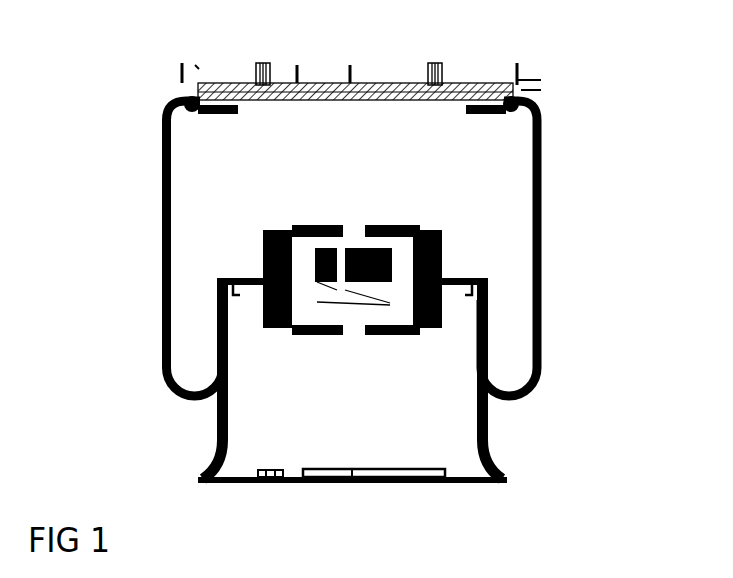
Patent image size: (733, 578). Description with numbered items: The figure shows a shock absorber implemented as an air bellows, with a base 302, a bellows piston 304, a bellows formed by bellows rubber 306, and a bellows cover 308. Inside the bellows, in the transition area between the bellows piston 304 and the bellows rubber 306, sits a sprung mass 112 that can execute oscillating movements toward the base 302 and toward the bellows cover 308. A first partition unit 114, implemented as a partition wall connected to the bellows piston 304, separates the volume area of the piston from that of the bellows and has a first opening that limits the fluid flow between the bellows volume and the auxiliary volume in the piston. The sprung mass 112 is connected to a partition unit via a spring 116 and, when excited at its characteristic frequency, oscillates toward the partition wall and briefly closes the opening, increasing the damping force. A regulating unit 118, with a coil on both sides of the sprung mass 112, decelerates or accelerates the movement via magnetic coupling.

The sprung mass 112 is at (392, 262).
The first partition unit 114 is at (392, 225).
The spring 116 is at (373, 322).
The regulating unit 118 is at (263, 258).
The base 302 is at (480, 485).
The bellows piston 304 is at (483, 423).
The bellows rubber 306 is at (545, 205).
The bellows cover 308 is at (470, 86).